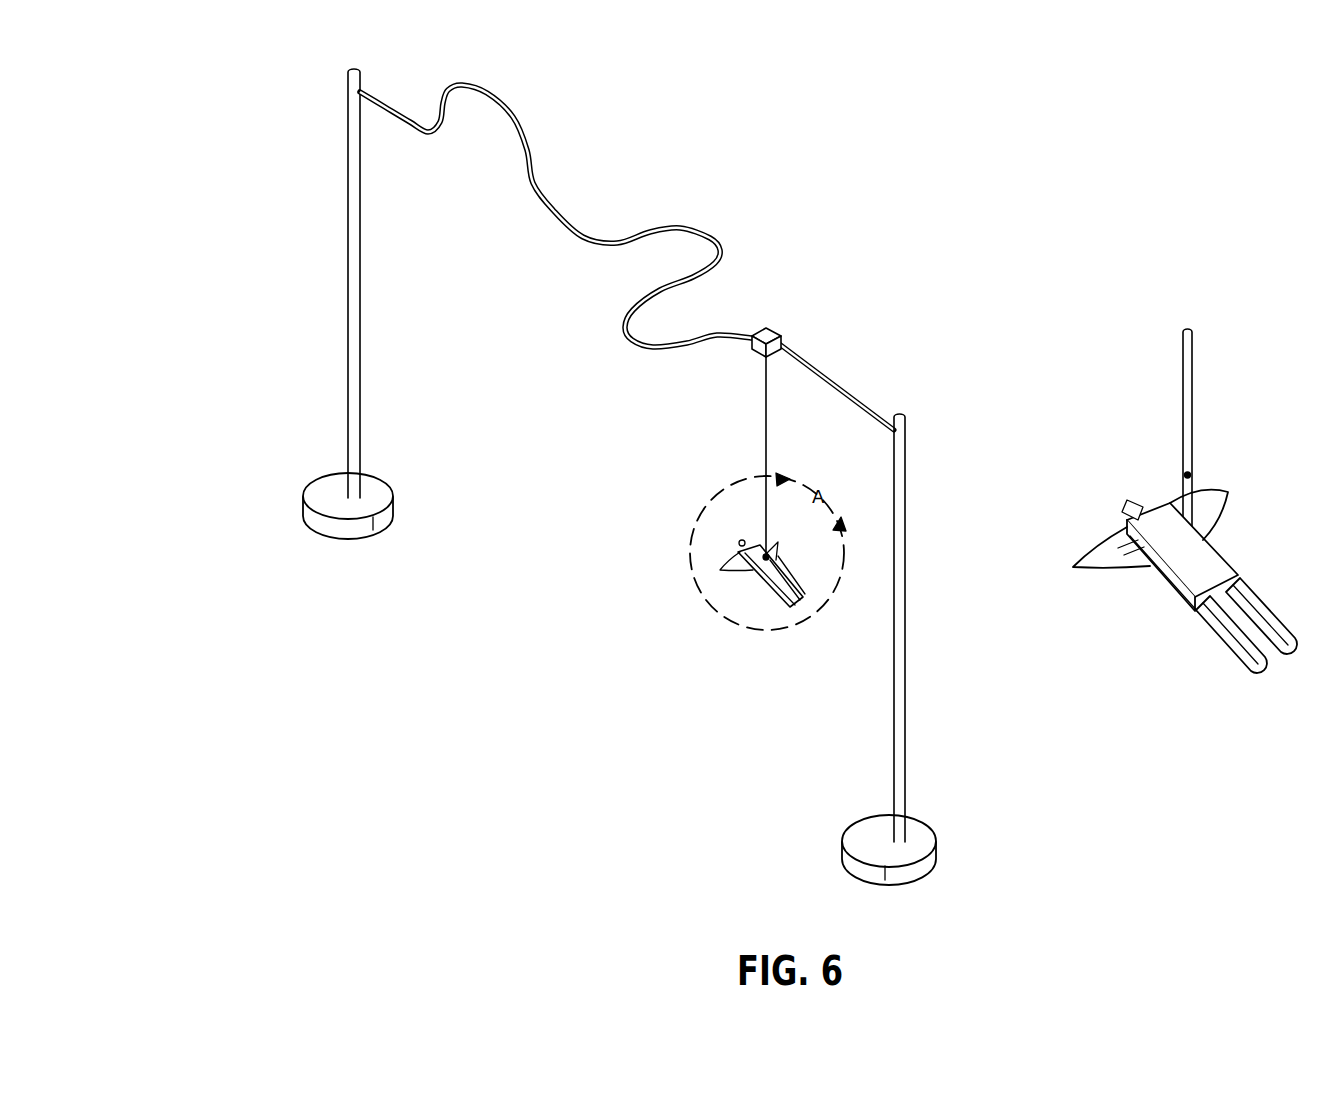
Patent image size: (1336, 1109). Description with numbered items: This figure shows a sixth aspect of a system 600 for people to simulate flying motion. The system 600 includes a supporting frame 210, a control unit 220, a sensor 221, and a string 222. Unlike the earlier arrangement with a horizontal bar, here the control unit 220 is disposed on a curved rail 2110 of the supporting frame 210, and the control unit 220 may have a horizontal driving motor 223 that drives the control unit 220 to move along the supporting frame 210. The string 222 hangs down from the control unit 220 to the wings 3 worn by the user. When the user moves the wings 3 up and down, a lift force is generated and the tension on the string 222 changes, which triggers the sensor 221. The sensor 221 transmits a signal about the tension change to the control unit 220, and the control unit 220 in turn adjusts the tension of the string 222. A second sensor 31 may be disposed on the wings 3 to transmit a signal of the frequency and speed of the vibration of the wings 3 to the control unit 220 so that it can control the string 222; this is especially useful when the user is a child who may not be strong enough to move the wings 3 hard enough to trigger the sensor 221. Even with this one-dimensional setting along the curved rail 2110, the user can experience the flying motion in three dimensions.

The system for people to simulate flying motion 600 is at (312, 300).
The supporting frame 210 is at (556, 207).
The curved rail 2110 is at (553, 213).
The control unit 220 is at (811, 384).
The sensor 221 is at (733, 361).
The string 222 is at (760, 408).
The horizontal driving motor 223 is at (782, 344).
The wings 3 is at (1100, 565).
The second sensor 31 is at (747, 555).